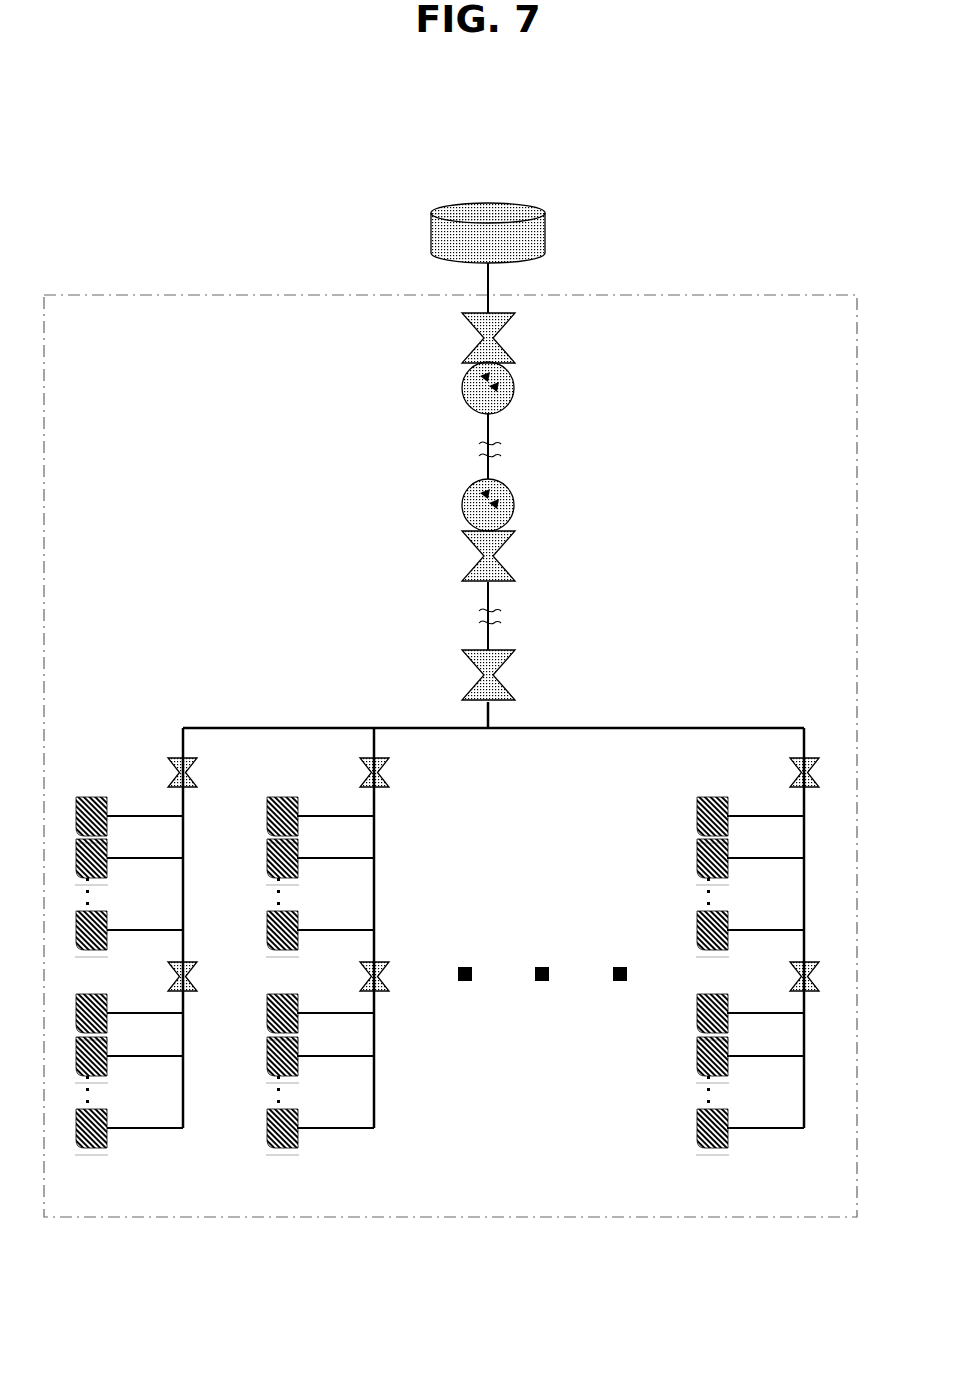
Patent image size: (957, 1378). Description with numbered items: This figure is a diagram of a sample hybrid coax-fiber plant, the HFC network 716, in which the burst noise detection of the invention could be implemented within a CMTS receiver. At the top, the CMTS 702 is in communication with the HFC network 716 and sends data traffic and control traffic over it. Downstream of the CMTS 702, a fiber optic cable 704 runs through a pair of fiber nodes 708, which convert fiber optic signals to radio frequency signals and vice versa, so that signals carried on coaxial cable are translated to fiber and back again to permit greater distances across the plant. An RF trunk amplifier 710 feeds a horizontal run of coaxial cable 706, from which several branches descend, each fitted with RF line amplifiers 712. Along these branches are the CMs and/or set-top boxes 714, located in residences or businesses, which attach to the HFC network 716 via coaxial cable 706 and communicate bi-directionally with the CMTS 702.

The CMTS 702 is at (540, 203).
The fiber optic cable 704 is at (495, 428).
The coaxial cables 706 is at (482, 280).
The fiber nodes 708 is at (510, 555).
The RF trunk amplifier 710 is at (508, 656).
The RF line amplifiers 712 is at (855, 976).
The CMs and/or set-top boxes 714 is at (693, 1130).
The HFC network 716 is at (102, 295).